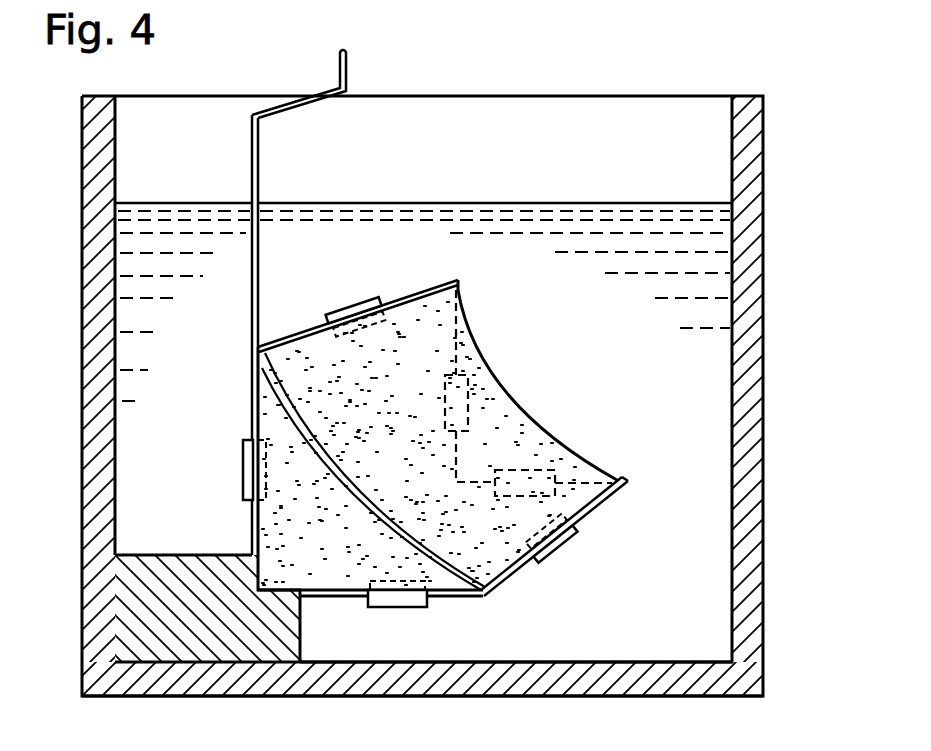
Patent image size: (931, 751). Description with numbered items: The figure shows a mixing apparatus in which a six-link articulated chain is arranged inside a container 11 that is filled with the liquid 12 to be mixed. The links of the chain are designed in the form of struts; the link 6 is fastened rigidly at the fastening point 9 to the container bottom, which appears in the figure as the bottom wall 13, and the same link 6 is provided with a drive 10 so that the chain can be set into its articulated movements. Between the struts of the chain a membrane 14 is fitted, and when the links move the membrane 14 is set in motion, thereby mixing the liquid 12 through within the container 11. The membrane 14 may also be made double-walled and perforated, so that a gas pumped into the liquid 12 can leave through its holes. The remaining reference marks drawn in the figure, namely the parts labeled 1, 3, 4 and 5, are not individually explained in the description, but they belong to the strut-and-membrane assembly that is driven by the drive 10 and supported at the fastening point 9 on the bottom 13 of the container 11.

The first electrode 1 is at (421, 292).
The second electrode 3 is at (604, 502).
The third electrode 4 is at (461, 598).
The gap below electrode 5 is at (320, 598).
The link 6 is at (254, 388).
The fastening point 9 is at (200, 568).
The drive 10 is at (276, 102).
The container 11 is at (746, 160).
The liquid 12 is at (712, 313).
The container bottom 13 is at (539, 681).
The membrane 14 is at (496, 406).